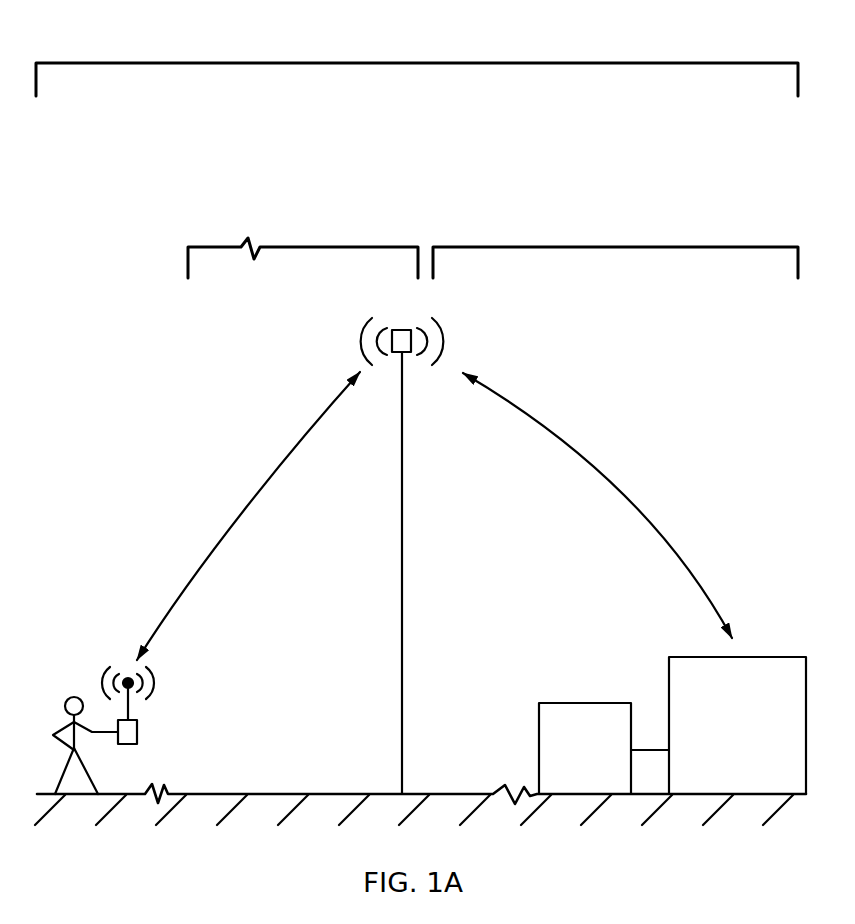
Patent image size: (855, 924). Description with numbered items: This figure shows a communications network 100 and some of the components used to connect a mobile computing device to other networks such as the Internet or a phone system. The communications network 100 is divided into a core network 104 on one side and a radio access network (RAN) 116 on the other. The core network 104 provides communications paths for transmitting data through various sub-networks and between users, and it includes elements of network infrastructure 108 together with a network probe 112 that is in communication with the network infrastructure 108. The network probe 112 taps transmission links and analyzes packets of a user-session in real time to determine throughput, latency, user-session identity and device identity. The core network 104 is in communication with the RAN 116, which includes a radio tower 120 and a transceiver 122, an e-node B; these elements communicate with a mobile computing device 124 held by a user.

The communications network 100 is at (419, 54).
The core network 104 is at (611, 236).
The network infrastructure 108 is at (754, 762).
The network probe 112 is at (603, 784).
The radio access network (RAN) 116 is at (294, 222).
The radio tower 120 is at (400, 598).
The transceiver 122 is at (411, 352).
The mobile computing device 124 is at (118, 728).